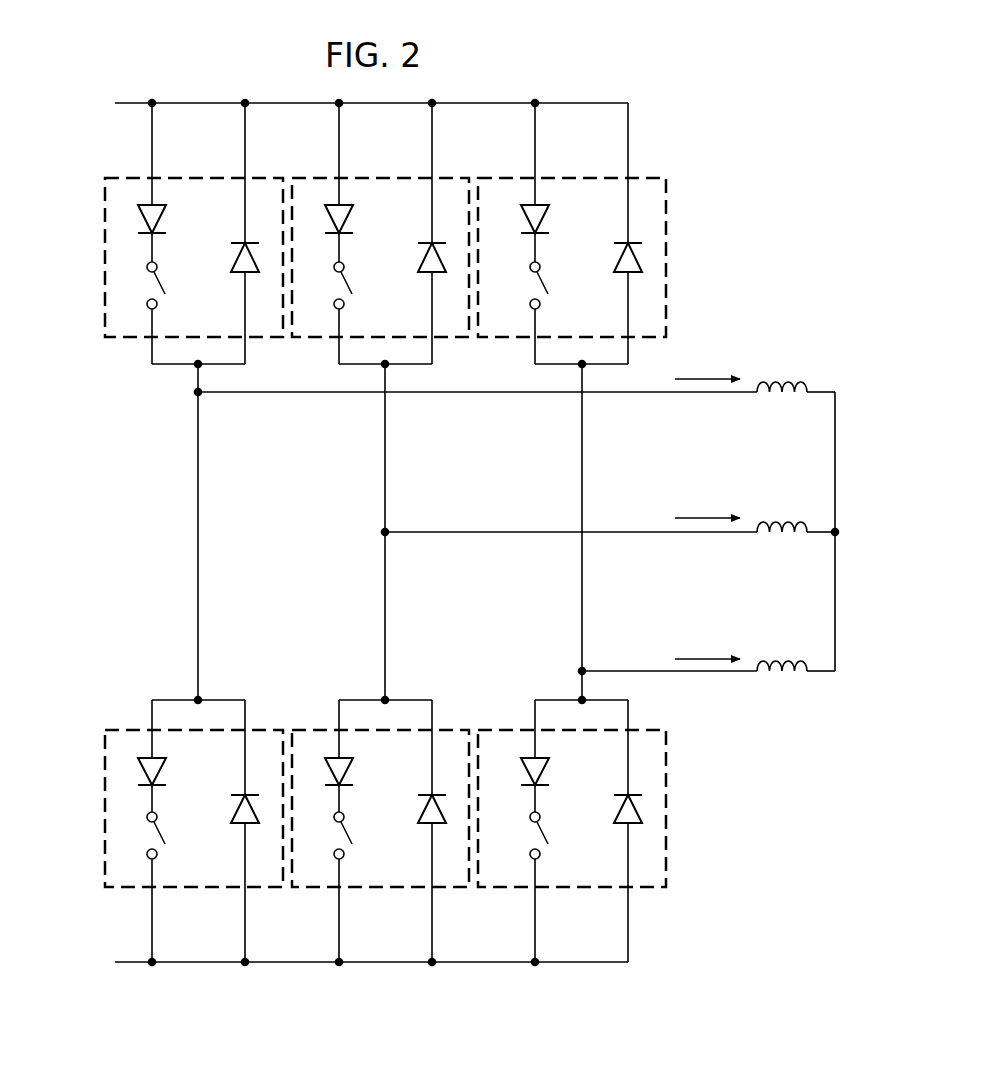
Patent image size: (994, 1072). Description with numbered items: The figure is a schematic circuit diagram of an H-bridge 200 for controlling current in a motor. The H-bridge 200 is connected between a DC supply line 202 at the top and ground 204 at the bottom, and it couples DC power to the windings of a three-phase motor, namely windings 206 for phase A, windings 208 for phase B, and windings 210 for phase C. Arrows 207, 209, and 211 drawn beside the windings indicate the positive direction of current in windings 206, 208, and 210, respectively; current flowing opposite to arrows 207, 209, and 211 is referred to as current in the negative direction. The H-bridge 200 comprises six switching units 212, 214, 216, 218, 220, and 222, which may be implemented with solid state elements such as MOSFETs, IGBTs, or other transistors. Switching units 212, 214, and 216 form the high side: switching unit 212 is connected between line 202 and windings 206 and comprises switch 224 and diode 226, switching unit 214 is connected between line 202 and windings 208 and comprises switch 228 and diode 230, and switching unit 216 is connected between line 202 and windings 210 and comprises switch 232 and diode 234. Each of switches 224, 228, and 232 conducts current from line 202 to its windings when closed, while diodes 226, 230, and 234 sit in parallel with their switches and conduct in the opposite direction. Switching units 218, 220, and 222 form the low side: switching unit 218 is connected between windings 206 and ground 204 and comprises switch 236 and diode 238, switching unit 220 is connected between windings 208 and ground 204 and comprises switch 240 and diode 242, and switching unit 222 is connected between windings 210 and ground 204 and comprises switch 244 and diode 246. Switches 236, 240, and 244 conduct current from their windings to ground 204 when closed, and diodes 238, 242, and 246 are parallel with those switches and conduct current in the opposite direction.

The H-bridge 200 is at (720, 90).
The line 202 is at (582, 102).
The ground 204 is at (581, 963).
The windings 206 is at (768, 397).
The arrow 207 is at (705, 377).
The windings 208 is at (782, 526).
The arrow 209 is at (705, 516).
The windings 210 is at (782, 665).
The arrow 211 is at (705, 657).
The switching unit 212 is at (138, 176).
The switching unit 214 is at (325, 176).
The switching unit 216 is at (573, 176).
The switching unit 218 is at (137, 891).
The switching unit 220 is at (325, 891).
The switching unit 222 is at (588, 891).
The switch 224 is at (166, 287).
The diode 226 is at (231, 256).
The switch 228 is at (353, 287).
The diode 230 is at (418, 256).
The switch 232 is at (549, 287).
The diode 234 is at (614, 256).
The switch 236 is at (166, 838).
The diode 238 is at (231, 806).
The switch 240 is at (353, 838).
The diode 242 is at (418, 806).
The switch 244 is at (549, 838).
The diode 246 is at (614, 806).